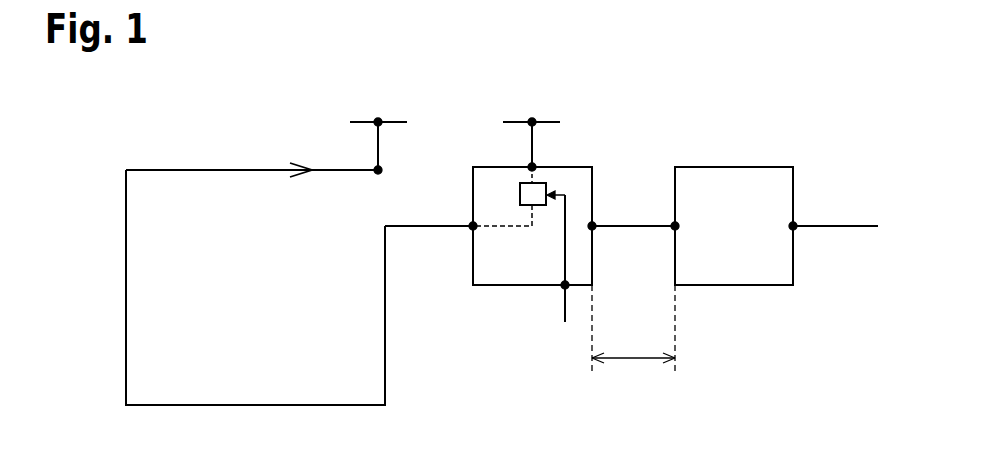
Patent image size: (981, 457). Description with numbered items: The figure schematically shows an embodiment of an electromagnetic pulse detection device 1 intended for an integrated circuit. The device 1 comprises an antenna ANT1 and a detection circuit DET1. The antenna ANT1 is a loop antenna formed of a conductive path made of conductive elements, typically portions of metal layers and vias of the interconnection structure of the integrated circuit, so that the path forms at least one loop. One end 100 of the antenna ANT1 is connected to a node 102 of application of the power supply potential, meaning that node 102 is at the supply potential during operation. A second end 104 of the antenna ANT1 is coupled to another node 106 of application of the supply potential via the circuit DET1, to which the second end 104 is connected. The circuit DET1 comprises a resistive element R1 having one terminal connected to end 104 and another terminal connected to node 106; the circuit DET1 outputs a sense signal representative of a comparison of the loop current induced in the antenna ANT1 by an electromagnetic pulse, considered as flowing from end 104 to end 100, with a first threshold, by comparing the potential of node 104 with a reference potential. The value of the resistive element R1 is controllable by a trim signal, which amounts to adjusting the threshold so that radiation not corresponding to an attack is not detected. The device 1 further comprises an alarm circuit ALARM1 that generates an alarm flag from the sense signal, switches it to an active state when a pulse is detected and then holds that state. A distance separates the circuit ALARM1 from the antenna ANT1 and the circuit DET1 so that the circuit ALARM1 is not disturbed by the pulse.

The electromagnetic pulse detection device 1 is at (89, 165).
The end of antenna 100 is at (382, 172).
The node of application of power supply potential Vdd 102 is at (382, 126).
The second end of antenna 104 is at (472, 228).
The node of application of power supply potential Vdd 106 is at (530, 125).
The antenna ANT1 is at (227, 163).
The detection circuit DET1 is at (583, 161).
The alarm circuit ALARM1 is at (748, 163).
The resistive element R1 is at (519, 183).